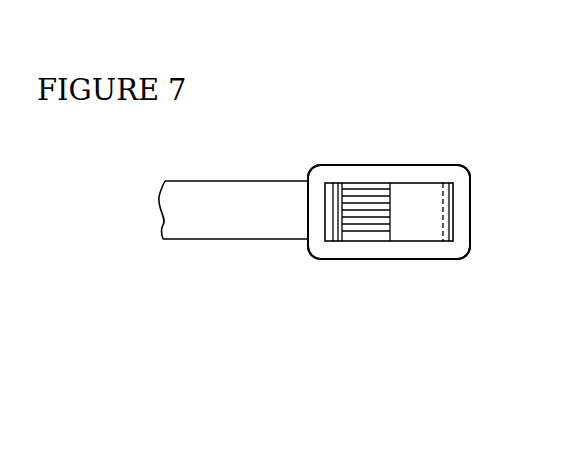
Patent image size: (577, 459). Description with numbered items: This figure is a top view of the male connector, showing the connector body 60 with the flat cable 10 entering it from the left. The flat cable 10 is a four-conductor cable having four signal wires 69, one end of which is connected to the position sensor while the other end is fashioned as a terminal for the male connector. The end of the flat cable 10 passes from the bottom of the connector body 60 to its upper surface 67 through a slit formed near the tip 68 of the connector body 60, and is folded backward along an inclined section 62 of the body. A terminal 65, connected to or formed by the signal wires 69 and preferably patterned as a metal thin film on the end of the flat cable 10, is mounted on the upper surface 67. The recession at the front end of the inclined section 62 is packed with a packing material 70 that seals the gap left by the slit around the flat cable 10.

The flat cable 10 is at (222, 193).
The connector body 60 is at (472, 200).
The inclined section 62 is at (407, 193).
The terminal 65 is at (365, 233).
The upper surface 67 is at (396, 108).
The tip 68 is at (457, 188).
The signal wires 69 is at (367, 207).
The packing material 70 is at (448, 233).